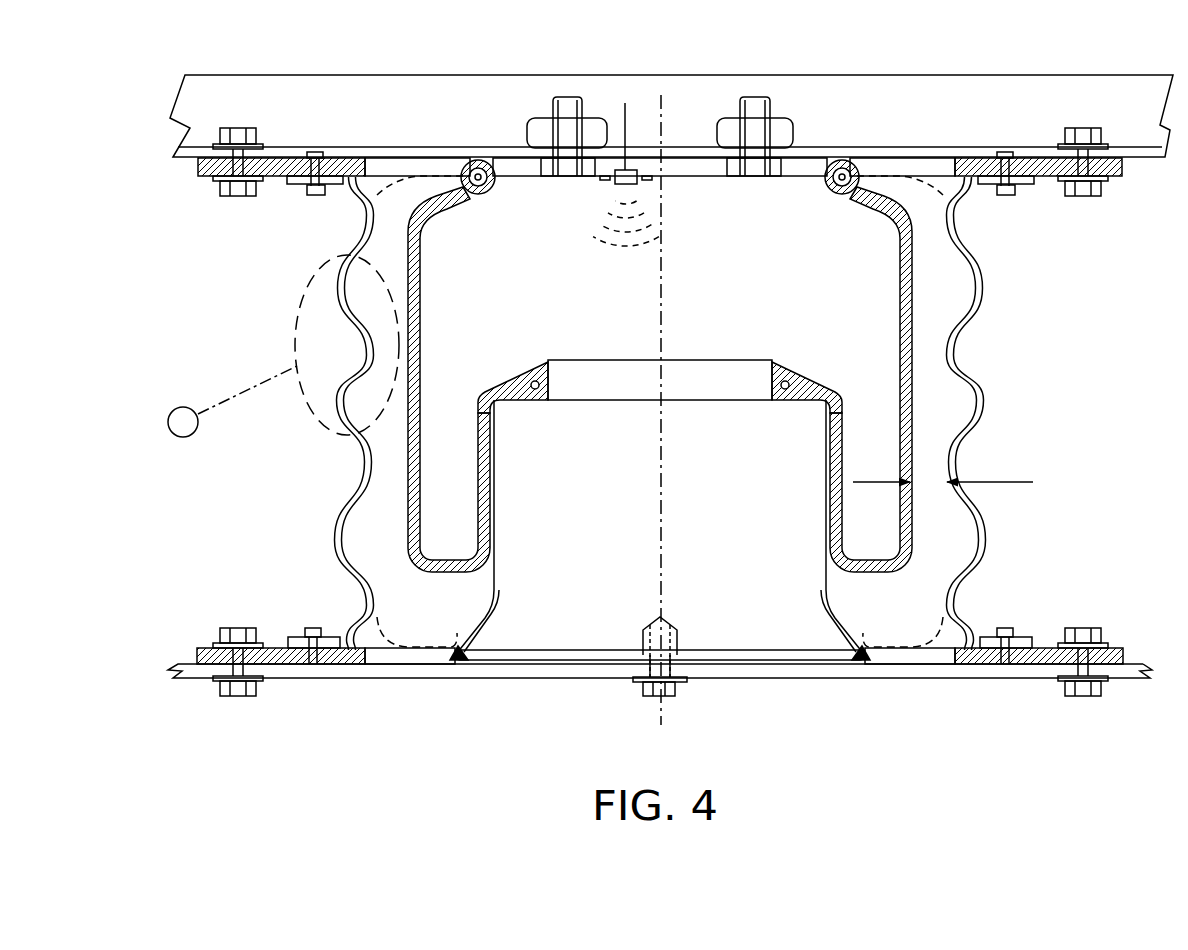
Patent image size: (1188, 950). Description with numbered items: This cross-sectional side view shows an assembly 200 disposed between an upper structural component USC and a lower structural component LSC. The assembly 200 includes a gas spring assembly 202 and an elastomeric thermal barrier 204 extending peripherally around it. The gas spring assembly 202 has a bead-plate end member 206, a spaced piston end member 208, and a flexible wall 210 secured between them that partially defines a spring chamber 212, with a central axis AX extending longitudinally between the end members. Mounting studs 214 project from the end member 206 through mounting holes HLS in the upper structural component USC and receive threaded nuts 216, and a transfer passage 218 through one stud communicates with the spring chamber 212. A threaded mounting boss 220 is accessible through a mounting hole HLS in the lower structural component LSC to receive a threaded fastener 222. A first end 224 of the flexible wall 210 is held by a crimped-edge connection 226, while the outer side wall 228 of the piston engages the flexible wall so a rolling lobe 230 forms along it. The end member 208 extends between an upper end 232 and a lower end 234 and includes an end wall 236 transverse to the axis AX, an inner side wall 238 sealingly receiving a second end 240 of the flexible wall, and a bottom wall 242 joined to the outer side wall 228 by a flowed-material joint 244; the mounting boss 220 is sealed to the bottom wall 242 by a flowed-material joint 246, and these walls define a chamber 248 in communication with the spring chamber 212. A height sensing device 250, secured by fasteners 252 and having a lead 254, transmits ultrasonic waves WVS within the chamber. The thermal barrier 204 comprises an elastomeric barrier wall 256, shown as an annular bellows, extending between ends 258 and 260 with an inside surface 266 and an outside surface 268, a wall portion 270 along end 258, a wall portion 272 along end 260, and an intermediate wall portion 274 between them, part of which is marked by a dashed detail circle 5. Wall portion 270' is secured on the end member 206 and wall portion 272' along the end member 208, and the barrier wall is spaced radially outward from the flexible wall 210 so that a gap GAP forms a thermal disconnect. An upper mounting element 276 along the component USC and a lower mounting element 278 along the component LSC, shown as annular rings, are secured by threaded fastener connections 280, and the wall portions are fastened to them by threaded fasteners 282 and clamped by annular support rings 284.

The assembly 200 is at (1112, 270).
The gas spring assembly 202 is at (943, 284).
The elastomeric thermal barrier 204 is at (992, 378).
The end member 206 is at (820, 158).
The end member 208 is at (845, 592).
The flexible wall 210 is at (398, 491).
The spring chamber 212 is at (450, 333).
The mounting studs 214 is at (535, 125).
The threaded nuts 216 is at (533, 122).
The transfer passage 218 is at (567, 105).
The threaded mounting boss 220 is at (665, 618).
The threaded fastener 222 is at (645, 682).
The first end 224 is at (854, 214).
The crimped-edge connection 226 is at (863, 175).
The outer side wall 228 is at (370, 597).
The rolling lobe 230 is at (450, 563).
The first or upper end 232 is at (778, 418).
The second or lower end 234 is at (492, 634).
The end wall 236 is at (522, 398).
The inner side wall 238 is at (558, 372).
The second end 240 is at (798, 373).
The bottom wall 242 is at (773, 663).
The flowed-material joint 244 is at (857, 663).
The flowed-material joint 246 is at (684, 655).
The chamber 248 is at (583, 618).
The height or distance sensing device 250 is at (612, 184).
The fasteners 252 is at (647, 176).
The lead or connection 254 is at (628, 100).
The barrier wall 256 is at (985, 428).
The end 258 is at (328, 232).
The end 260 is at (320, 548).
The inside surface 266 is at (372, 452).
The outside surface 268 is at (345, 410).
The wall portion 270 is at (334, 101).
The wall portion 270' is at (660, 140).
The wall portion 272 is at (326, 706).
The wall portion 272' is at (655, 679).
The intermediate wall portion 274 is at (340, 293).
The upper mounting element 276 is at (1037, 160).
The lower mounting element 278 is at (1037, 667).
The threaded fastener connections 280 is at (220, 128).
The threaded fasteners 282 is at (318, 193).
The annular support rings 284 is at (315, 157).
The detail view reference 5 is at (232, 401).
The upper structural component USC is at (950, 90).
The lower structural component LSC is at (450, 676).
The mounting holes HLS is at (540, 198).
The ultrasonic waves WVS is at (640, 255).
The central axis AX is at (660, 428).
The gap GAP is at (1000, 484).